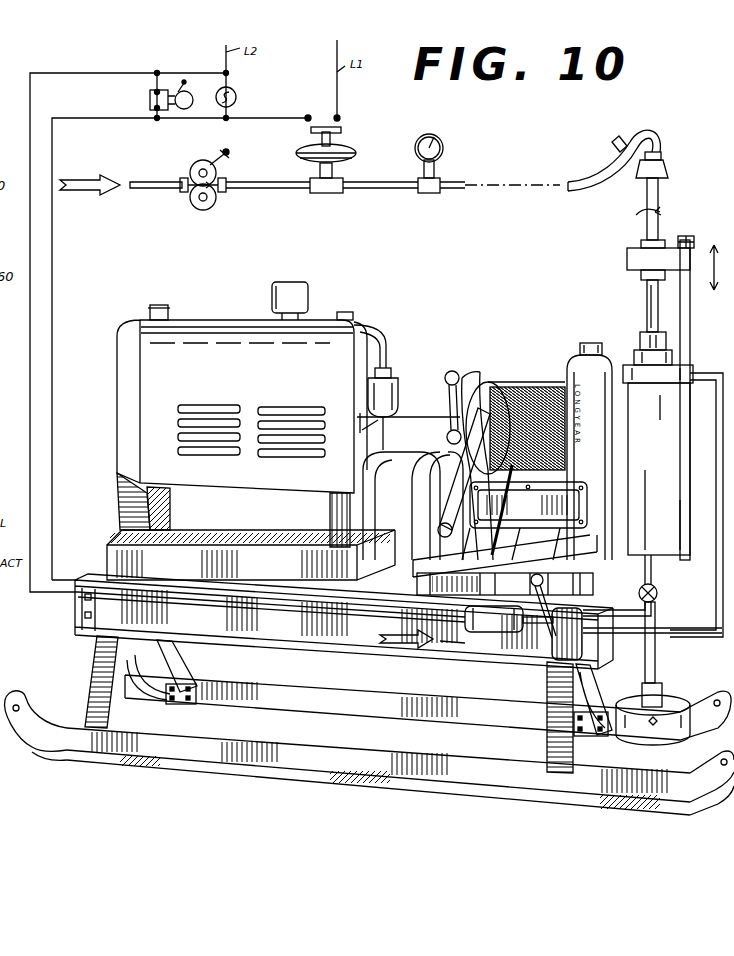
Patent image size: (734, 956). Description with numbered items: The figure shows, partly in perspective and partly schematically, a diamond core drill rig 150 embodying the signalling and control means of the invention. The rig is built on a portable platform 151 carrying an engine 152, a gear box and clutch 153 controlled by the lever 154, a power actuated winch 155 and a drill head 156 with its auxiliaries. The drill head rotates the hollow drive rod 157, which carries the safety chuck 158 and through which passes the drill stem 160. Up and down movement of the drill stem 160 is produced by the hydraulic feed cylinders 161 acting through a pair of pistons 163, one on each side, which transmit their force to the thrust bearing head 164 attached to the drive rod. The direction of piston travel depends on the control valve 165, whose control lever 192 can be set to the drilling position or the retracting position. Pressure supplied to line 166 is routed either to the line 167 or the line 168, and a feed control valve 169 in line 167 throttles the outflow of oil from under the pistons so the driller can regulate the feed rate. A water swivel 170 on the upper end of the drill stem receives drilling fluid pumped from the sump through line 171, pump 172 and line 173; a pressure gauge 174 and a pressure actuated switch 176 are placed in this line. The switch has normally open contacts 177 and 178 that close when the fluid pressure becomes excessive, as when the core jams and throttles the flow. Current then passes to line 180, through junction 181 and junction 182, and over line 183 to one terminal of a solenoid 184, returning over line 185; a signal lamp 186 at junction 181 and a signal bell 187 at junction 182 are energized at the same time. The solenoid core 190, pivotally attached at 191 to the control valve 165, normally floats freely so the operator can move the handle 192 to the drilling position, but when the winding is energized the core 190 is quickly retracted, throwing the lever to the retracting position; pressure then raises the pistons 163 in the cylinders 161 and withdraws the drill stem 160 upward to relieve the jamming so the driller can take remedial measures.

The drill rig 150 is at (80, 645).
The portable platform 151 is at (168, 775).
The engine 152 is at (153, 403).
The gear box and clutch 153 is at (460, 472).
The lever 154 is at (462, 452).
The power actuated winch 155 is at (540, 378).
The drill head 156 is at (710, 468).
The drive rod 157 is at (656, 666).
The safety chuck 158 is at (676, 705).
The drill stem 160 is at (660, 205).
The hydraulic cylinders 161 is at (660, 385).
The pistons 163 is at (652, 300).
The thrust bearing head 164 is at (672, 240).
The control valve 165 is at (550, 660).
The line 166 is at (442, 652).
The line 167 is at (632, 618).
The line 168 is at (722, 628).
The feed control valve 169 is at (659, 597).
The water swivel 170 is at (667, 170).
The line 171 is at (150, 190).
The pump 172 is at (210, 208).
The line 173 is at (565, 190).
The pressure gauge 174 is at (442, 146).
The pressure actuated switch 176 is at (350, 148).
The contact 177 is at (340, 116).
The contact 178 is at (308, 115).
The line 180 is at (283, 119).
The junction 181 is at (252, 136).
The junction 182 is at (157, 119).
The line 183 is at (55, 157).
The solenoid 184 is at (492, 634).
The line 185 is at (352, 615).
The signal lamp 186 is at (237, 97).
The signal bell 187 is at (150, 100).
The solenoid core 190 is at (527, 624).
The pivotal attachment 191 is at (598, 585).
The control lever 192 is at (560, 572).